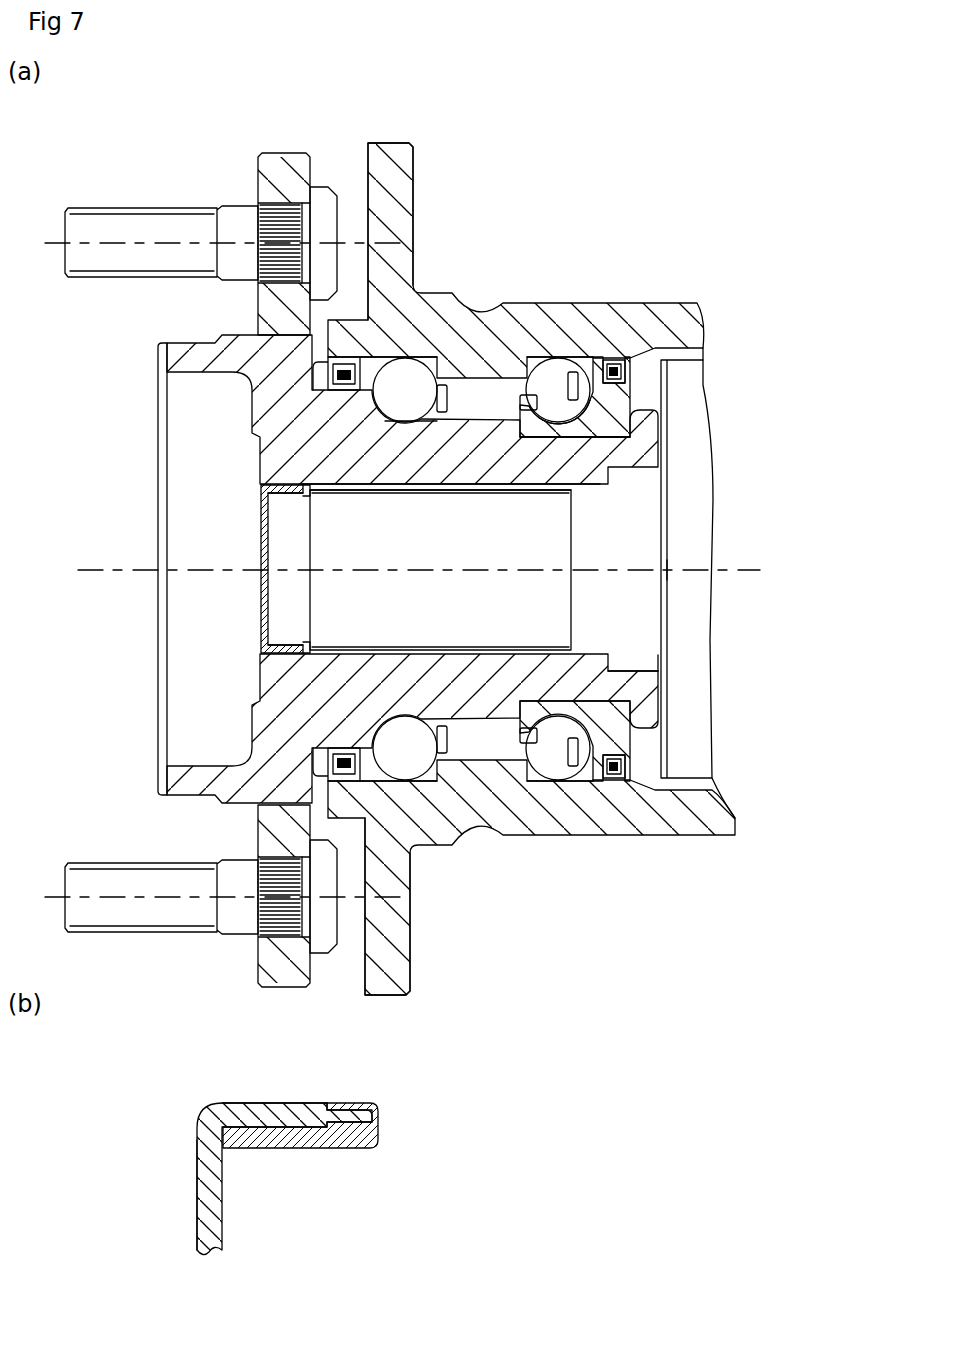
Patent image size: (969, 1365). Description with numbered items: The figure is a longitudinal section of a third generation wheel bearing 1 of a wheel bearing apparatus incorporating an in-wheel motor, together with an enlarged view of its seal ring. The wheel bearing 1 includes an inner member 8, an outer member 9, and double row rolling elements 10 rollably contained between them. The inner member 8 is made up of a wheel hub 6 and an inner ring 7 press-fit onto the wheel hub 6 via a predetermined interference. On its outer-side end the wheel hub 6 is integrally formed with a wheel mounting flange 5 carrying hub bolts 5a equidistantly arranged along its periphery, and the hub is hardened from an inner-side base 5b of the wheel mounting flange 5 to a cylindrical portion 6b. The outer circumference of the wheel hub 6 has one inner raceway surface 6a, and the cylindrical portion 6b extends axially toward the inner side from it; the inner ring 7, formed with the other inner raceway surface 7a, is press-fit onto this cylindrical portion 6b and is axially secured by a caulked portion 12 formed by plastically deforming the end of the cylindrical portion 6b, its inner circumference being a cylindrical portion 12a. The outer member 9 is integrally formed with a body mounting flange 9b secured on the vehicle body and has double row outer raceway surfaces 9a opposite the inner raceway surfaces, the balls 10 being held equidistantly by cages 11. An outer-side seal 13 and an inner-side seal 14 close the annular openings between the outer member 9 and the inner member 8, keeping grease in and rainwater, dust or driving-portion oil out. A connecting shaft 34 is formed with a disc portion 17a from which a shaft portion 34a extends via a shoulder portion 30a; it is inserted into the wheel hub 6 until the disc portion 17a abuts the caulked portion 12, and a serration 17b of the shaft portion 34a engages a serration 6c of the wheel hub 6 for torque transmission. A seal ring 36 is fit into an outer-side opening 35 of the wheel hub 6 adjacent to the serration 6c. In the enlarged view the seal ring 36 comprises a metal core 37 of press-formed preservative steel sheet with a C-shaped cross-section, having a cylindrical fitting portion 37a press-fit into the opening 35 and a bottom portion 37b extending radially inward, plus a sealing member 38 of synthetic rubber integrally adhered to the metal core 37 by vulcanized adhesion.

The wheel bearing 1 is at (237, 192).
The wheel mounting flange 5 is at (288, 160).
The hub bolts 5a is at (112, 232).
The inner-side base 5b is at (330, 345).
The wheel hub 6 is at (265, 392).
The inner raceway surface 6a is at (400, 400).
The cylindrical portion 6b is at (594, 440).
The serration 6c is at (345, 492).
The inner ring 7 is at (620, 394).
The inner raceway surface 7a is at (531, 437).
The inner member 8 is at (253, 423).
The outer member 9 is at (607, 327).
The outer raceway surfaces 9a is at (417, 376).
The body mounting flange 9b is at (388, 167).
The rolling elements 10 is at (548, 773).
The cages 11 is at (523, 728).
The caulked portion 12 is at (648, 416).
The cylindrical portion 12a is at (640, 631).
The outer-side seal 13 is at (320, 768).
The inner-side seal 14 is at (612, 782).
The disc portion 17a is at (687, 610).
The serration 17b is at (360, 673).
The shoulder portion 30a is at (652, 700).
The connecting shaft 34 is at (700, 518).
The shaft portion 34a is at (430, 617).
The outer-side opening 35 is at (262, 500).
The seal ring 36 is at (262, 580).
The metal core 37 is at (113, 1112).
The fitting portion 37a is at (270, 1110).
The bottom portion 37b is at (212, 1177).
The sealing member 38 is at (352, 1145).